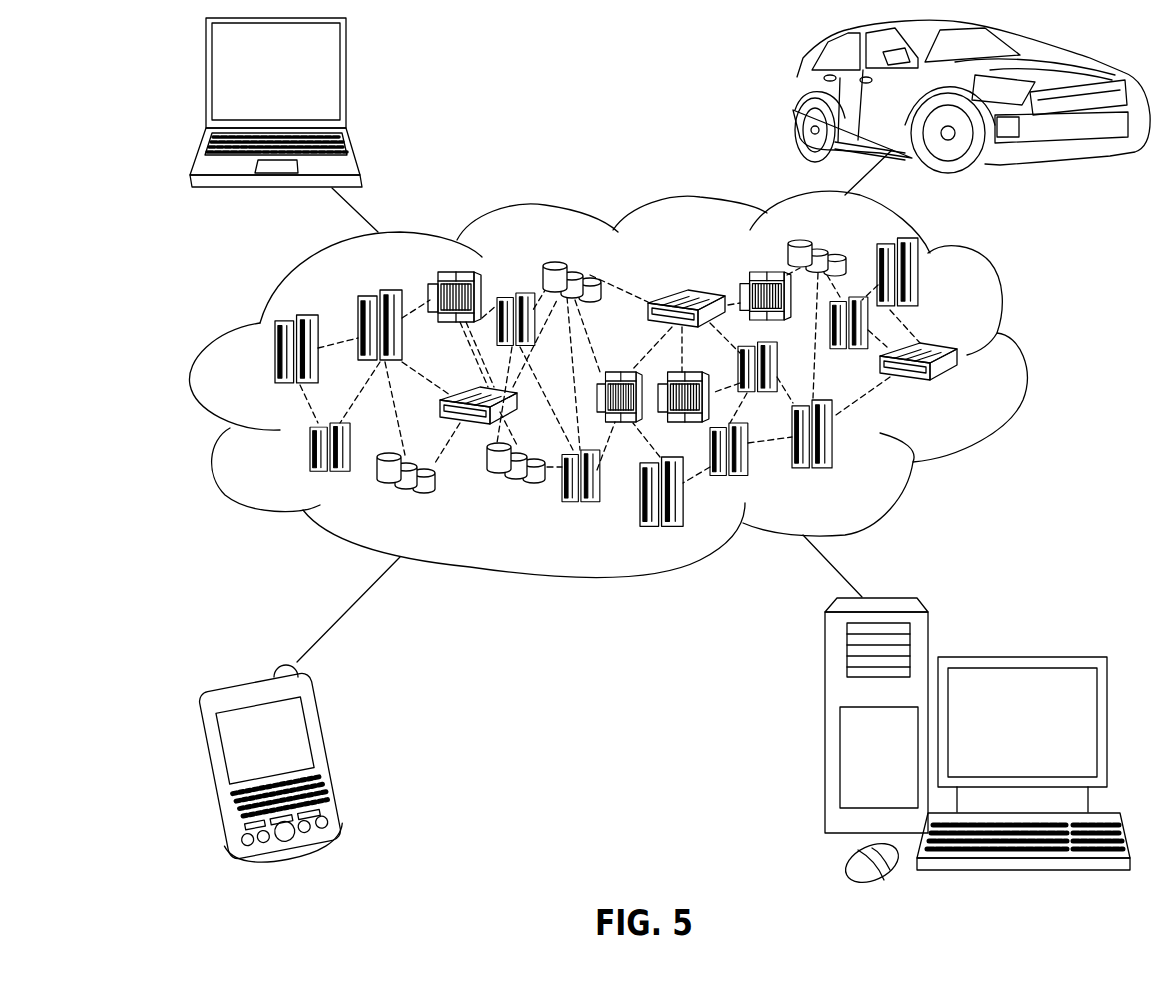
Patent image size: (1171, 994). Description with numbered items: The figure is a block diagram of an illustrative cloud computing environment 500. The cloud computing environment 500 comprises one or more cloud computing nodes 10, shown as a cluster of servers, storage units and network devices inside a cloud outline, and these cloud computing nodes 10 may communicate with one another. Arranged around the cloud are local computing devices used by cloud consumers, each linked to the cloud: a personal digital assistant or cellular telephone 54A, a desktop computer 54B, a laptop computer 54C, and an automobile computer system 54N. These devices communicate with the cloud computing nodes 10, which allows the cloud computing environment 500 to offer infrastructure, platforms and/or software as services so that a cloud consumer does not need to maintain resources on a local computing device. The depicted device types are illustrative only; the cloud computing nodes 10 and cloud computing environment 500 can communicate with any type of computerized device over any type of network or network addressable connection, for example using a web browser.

The cloud computing environment 500 is at (1018, 360).
The cloud computing nodes 10 is at (970, 395).
The personal digital assistant or cellular telephone 54A is at (337, 753).
The desktop computer 54B is at (1018, 657).
The laptop computer 54C is at (346, 80).
The automobile computer system 54N is at (793, 97).